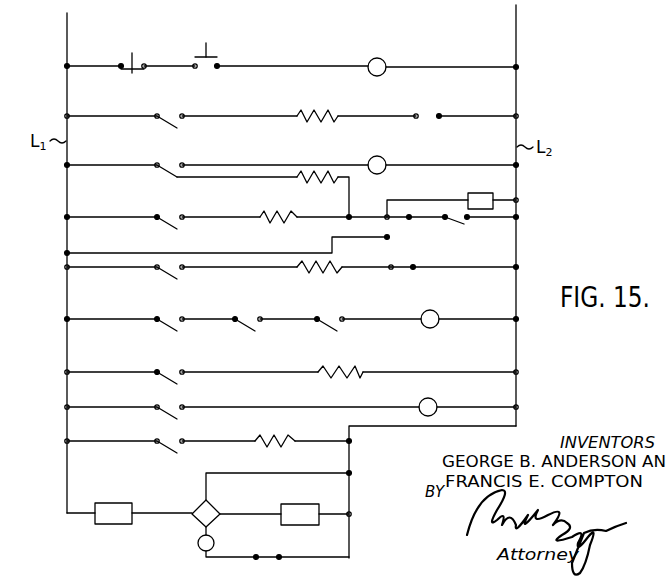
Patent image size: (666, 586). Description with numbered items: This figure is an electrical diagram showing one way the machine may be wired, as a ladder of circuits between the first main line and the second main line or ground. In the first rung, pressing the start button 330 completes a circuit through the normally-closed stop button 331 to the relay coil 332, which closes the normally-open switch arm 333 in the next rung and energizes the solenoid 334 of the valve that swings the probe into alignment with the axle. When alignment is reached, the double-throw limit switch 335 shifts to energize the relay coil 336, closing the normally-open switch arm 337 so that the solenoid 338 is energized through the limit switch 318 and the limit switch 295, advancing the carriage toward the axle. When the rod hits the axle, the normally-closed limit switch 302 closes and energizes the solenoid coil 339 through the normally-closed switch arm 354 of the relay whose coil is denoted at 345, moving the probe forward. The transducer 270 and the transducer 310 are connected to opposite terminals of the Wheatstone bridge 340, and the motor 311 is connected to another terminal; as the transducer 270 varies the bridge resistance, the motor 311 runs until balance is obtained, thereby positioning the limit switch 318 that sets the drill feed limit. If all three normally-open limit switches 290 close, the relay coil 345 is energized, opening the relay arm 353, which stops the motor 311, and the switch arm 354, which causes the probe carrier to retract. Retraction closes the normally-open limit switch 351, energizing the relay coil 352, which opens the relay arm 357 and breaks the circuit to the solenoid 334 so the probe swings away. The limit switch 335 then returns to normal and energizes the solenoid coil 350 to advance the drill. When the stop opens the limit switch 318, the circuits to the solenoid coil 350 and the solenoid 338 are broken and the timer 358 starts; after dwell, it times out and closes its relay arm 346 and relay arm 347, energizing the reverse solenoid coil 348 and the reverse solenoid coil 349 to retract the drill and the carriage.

The transducer 270 is at (124, 525).
The normally-open limit switches 290 is at (168, 327).
The limit switch 295 is at (457, 226).
The normally-closed limit switch 302 is at (167, 277).
The transducer 310 is at (303, 525).
The motor 311 is at (214, 543).
The limit switch 318 is at (390, 222).
The start button 330 is at (218, 57).
The stop button 331 is at (133, 74).
The relay coil 332 is at (384, 74).
The switch arm 333 is at (165, 124).
The solenoid 334 is at (331, 121).
The limit switch 335 is at (167, 173).
The relay coil 336 is at (384, 172).
The switch arm 337 is at (163, 226).
The solenoid 338 is at (228, 232).
The solenoid coil 339 is at (322, 274).
The Wheatstone bridge 340 is at (190, 524).
The relay coil 345 is at (427, 327).
The relay arm 346 is at (167, 378).
The relay arm 347 is at (167, 447).
The reverse solenoid coil 348 is at (340, 384).
The reverse solenoid coil 349 is at (292, 446).
The solenoid coil 350 is at (317, 190).
The limit switch 351 is at (167, 413).
The relay coil 352 is at (435, 401).
The relay arm 353 is at (279, 559).
The switch arm 354 is at (406, 270).
The relay arm 357 is at (426, 119).
The timer 358 is at (478, 193).